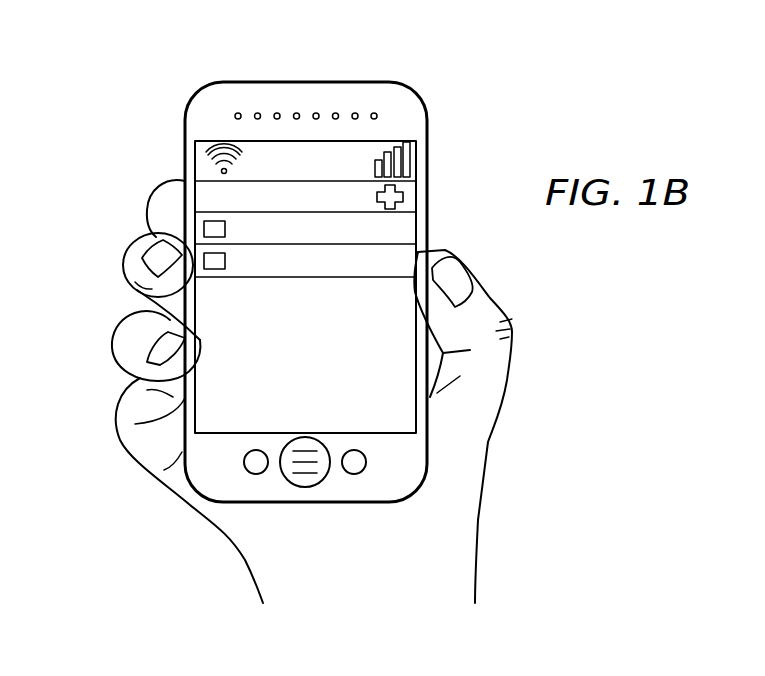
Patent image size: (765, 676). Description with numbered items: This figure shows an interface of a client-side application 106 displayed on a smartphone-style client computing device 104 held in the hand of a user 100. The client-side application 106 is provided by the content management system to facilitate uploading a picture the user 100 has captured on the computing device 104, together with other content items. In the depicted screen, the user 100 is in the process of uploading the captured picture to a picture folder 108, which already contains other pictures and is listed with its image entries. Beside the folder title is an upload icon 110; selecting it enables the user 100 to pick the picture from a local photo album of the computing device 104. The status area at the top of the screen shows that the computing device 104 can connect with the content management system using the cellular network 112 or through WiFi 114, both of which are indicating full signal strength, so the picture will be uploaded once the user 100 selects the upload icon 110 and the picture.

The user 100 is at (488, 442).
The client computing device 104 is at (303, 83).
The client-side application 106 is at (233, 384).
The picture folder 108 is at (200, 198).
The upload icon 110 is at (403, 197).
The cellular network 112 is at (394, 143).
The WiFi 114 is at (222, 143).